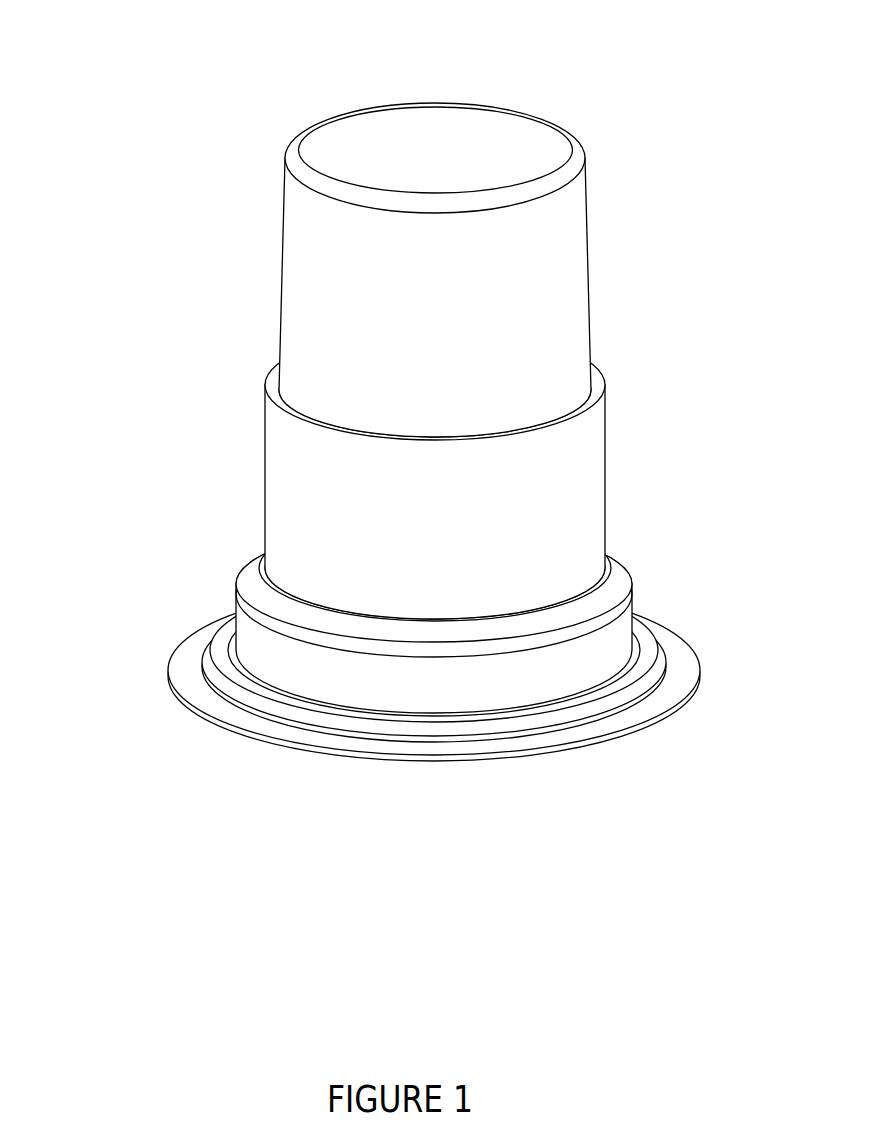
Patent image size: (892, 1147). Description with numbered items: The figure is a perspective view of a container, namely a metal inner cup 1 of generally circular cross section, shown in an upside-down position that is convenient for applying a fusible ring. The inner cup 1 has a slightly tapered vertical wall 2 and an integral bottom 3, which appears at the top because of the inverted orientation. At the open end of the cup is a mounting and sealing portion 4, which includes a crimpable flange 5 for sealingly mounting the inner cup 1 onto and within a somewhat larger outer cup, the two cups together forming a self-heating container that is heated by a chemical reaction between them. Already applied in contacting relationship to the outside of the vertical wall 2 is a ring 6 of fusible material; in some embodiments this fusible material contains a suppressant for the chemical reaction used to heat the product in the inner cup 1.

The inner cup 1 is at (435, 388).
The vertical wall 2 is at (330, 283).
The bottom 3 is at (352, 148).
The mounting and sealing portion 4 is at (148, 640).
The crimpable flange 5 is at (683, 668).
The ring of fusible material 6 is at (588, 503).